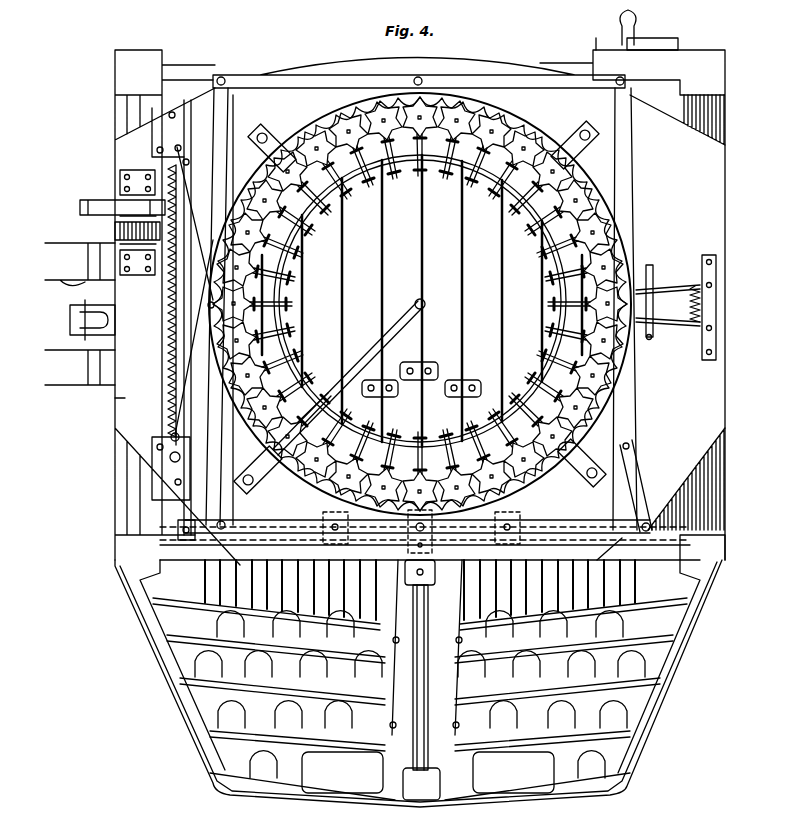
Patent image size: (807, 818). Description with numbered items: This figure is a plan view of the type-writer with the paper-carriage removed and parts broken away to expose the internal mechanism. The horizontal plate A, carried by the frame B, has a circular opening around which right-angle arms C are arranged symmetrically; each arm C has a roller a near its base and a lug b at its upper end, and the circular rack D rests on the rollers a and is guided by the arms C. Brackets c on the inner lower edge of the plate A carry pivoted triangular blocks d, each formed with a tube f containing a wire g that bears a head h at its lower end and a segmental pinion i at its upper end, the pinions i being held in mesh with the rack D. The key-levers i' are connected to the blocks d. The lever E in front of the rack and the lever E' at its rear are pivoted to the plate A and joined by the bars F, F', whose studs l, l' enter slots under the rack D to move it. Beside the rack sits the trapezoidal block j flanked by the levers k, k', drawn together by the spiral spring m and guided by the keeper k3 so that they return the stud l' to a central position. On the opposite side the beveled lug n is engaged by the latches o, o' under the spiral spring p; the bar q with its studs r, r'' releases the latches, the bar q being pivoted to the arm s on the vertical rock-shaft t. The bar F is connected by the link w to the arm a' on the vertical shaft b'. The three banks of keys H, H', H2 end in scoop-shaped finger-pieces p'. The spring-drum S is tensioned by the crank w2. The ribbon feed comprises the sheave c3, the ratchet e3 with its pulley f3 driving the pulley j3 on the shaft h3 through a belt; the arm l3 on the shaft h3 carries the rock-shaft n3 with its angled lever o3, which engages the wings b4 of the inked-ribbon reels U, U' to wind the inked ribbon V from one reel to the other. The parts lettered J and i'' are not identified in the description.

The horizontal plate A is at (420, 307).
The frame B is at (726, 498).
The right-angle arm C is at (272, 147).
The bracket c is at (420, 308).
The circular rack D is at (338, 104).
The lever E is at (425, 518).
The lever E' is at (419, 83).
The bar F is at (220, 308).
The bar F' is at (630, 309).
The bank of keys H is at (419, 683).
The bank of keys H' is at (429, 666).
The bank of keys H2 is at (636, 716).
The outlet box J is at (556, 770).
The drum S is at (708, 126).
The arm s is at (165, 520).
The inked-ribbon reel U is at (80, 264).
The inked-ribbon reel U' is at (80, 367).
The inked ribbon V is at (426, 665).
The roller a is at (421, 784).
The arm a' is at (621, 549).
The lug b is at (335, 535).
The vertical shaft b' is at (500, 536).
The wing b4 is at (78, 334).
The sheave c3 is at (114, 232).
The triangular block d is at (377, 377).
The ratchet e3 is at (120, 226).
The tube f is at (420, 301).
The pulley f3 is at (122, 192).
The wire g is at (374, 128).
The head h is at (420, 304).
The shaft h3 is at (115, 408).
The segmental pinion i is at (420, 304).
The key-lever i' is at (420, 387).
The rod i'' is at (512, 291).
The trapezoidal block j is at (681, 304).
The pulley j3 is at (96, 198).
The lever k is at (390, 263).
The lever k' is at (668, 281).
The keeper k3 is at (650, 340).
The stud l is at (180, 328).
The stud l' is at (649, 297).
The arm l3 is at (93, 320).
The spiral spring m is at (698, 314).
The lug n is at (204, 298).
The rock-shaft n3 is at (90, 305).
The latch o is at (195, 223).
The latch o' is at (194, 337).
The angled lever o3 is at (78, 318).
The spiral spring p is at (162, 301).
The finger-piece p' is at (420, 694).
The bar q is at (190, 480).
The stud r is at (189, 155).
The stud r'' is at (198, 434).
The rock-shaft t is at (385, 531).
The link w is at (640, 495).
The crank w2 is at (650, 44).